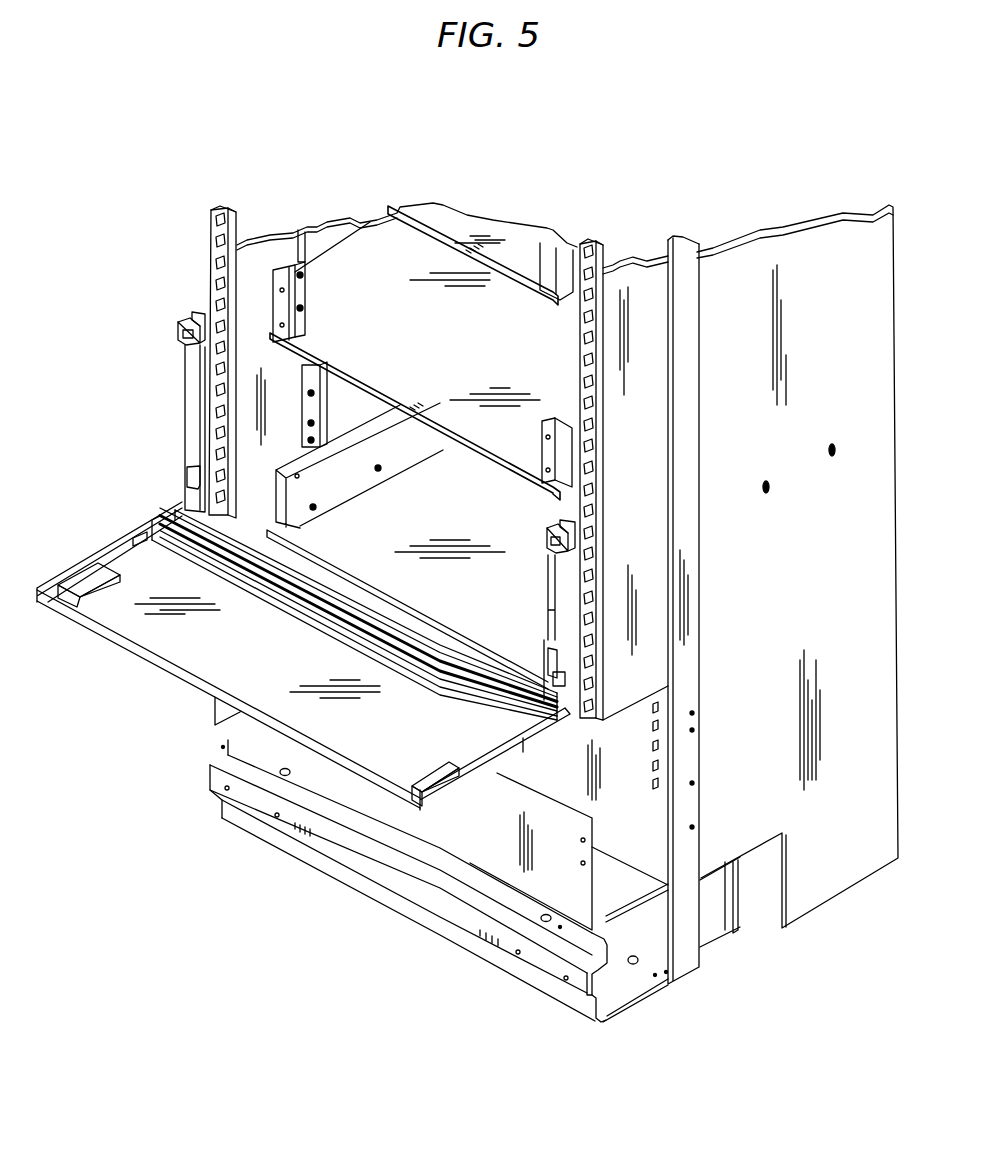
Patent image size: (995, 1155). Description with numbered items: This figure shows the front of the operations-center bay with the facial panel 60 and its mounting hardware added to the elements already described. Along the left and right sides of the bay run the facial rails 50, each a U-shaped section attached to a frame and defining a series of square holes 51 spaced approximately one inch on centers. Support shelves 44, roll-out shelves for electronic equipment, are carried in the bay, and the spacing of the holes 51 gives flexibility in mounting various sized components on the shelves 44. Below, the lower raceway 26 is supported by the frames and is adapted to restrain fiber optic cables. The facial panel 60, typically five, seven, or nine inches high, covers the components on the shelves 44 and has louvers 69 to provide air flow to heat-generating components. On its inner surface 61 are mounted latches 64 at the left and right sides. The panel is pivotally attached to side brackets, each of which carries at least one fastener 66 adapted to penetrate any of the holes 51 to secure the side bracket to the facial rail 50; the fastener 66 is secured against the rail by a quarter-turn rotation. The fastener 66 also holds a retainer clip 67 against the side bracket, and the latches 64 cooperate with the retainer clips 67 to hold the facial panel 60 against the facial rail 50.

The lower raceway 26 is at (468, 845).
The support shelf 44 is at (413, 373).
The facial rail 50 is at (220, 252).
The holes 51 is at (220, 285).
The facial panel 60 is at (125, 652).
The inner surface 61 is at (184, 673).
The latch 64 is at (80, 575).
The fastener 66 is at (178, 330).
The retainer clip 67 is at (562, 548).
The louvers 69 is at (178, 348).